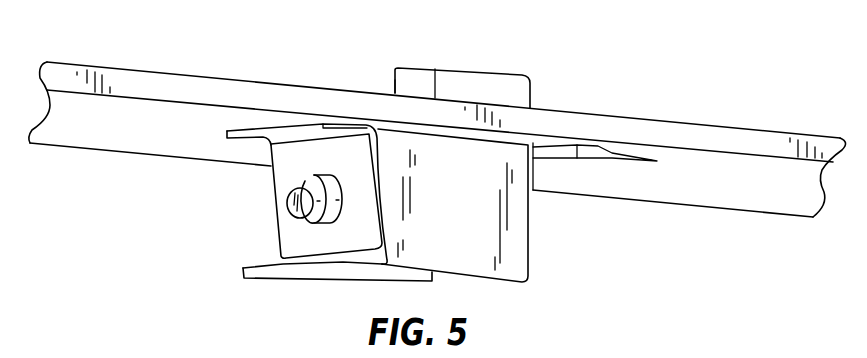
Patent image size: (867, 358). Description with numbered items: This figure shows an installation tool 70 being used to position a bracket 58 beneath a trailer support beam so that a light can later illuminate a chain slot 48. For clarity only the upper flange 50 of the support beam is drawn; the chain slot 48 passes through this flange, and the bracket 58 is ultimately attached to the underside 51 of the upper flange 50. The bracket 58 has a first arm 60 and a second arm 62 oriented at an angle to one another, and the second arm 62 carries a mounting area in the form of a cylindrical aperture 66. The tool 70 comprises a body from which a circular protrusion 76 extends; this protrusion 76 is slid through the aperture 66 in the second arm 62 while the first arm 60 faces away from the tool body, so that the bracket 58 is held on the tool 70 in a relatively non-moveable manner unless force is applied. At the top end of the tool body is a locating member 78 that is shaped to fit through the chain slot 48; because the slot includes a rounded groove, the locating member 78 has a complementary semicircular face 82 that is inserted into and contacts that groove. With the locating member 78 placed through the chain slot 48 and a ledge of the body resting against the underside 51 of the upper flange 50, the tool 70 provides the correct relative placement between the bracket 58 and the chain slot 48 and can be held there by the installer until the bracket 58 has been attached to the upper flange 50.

The chain slot 48 is at (594, 164).
The upper flange 50 is at (737, 138).
The underside of the upper flange 51 is at (692, 184).
The bracket 58 is at (280, 229).
The first arm 60 is at (258, 133).
The second arm 62 is at (302, 237).
The aperture 66 is at (345, 208).
The installation tool 70 is at (531, 243).
The protrusion 76 is at (288, 203).
The locating member 78 is at (487, 85).
The semicircular face 82 is at (388, 82).